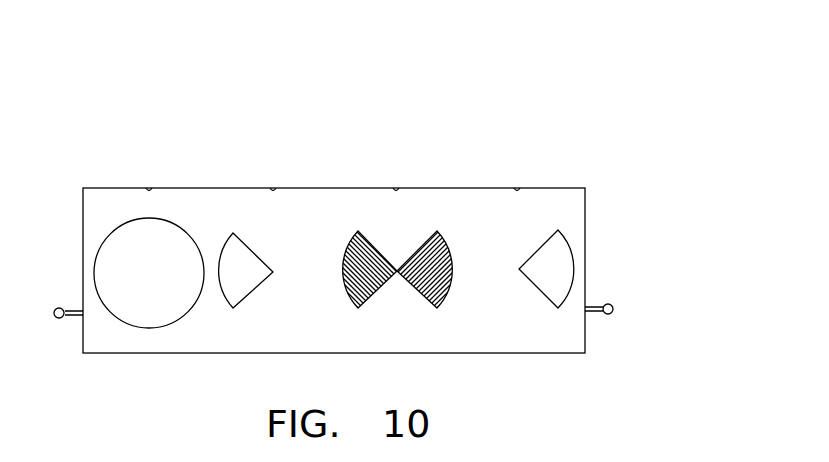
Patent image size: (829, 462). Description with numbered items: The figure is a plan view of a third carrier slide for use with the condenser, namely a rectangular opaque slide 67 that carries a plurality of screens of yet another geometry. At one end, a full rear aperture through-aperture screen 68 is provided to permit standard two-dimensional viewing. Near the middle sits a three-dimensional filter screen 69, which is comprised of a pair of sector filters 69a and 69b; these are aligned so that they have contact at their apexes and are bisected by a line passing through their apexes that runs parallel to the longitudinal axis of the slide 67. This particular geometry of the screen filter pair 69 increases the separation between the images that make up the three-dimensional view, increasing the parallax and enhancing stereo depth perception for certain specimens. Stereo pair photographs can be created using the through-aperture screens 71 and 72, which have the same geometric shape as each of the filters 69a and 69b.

The rectangular opaque slide 67 is at (605, 222).
The full rear aperture through-aperture screen 68 is at (149, 218).
The 3-D filter screen 69 is at (394, 217).
The sector filter 69a is at (357, 238).
The sector filter 69b is at (436, 237).
The through-aperture screen 71 is at (249, 247).
The through-aperture screen 72 is at (541, 246).